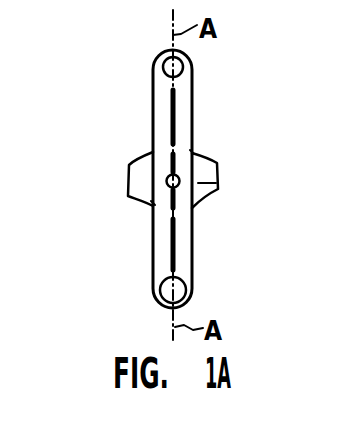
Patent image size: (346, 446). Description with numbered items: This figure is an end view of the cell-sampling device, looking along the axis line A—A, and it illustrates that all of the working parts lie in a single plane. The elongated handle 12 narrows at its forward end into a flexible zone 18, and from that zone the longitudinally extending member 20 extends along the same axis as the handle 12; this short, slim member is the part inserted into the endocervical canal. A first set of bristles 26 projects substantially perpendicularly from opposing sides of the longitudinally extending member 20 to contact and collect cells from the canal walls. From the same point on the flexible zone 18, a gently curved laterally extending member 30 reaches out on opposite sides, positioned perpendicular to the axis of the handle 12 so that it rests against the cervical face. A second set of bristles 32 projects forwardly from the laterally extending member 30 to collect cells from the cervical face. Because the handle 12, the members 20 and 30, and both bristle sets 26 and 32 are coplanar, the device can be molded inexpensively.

The handle 12 is at (127, 183).
The flexible zone 18 is at (218, 189).
The longitudinally extending member 20 is at (167, 176).
The first set of bristles 26 is at (192, 152).
The laterally extending member 30 is at (163, 67).
The second set of bristles 32 is at (192, 101).